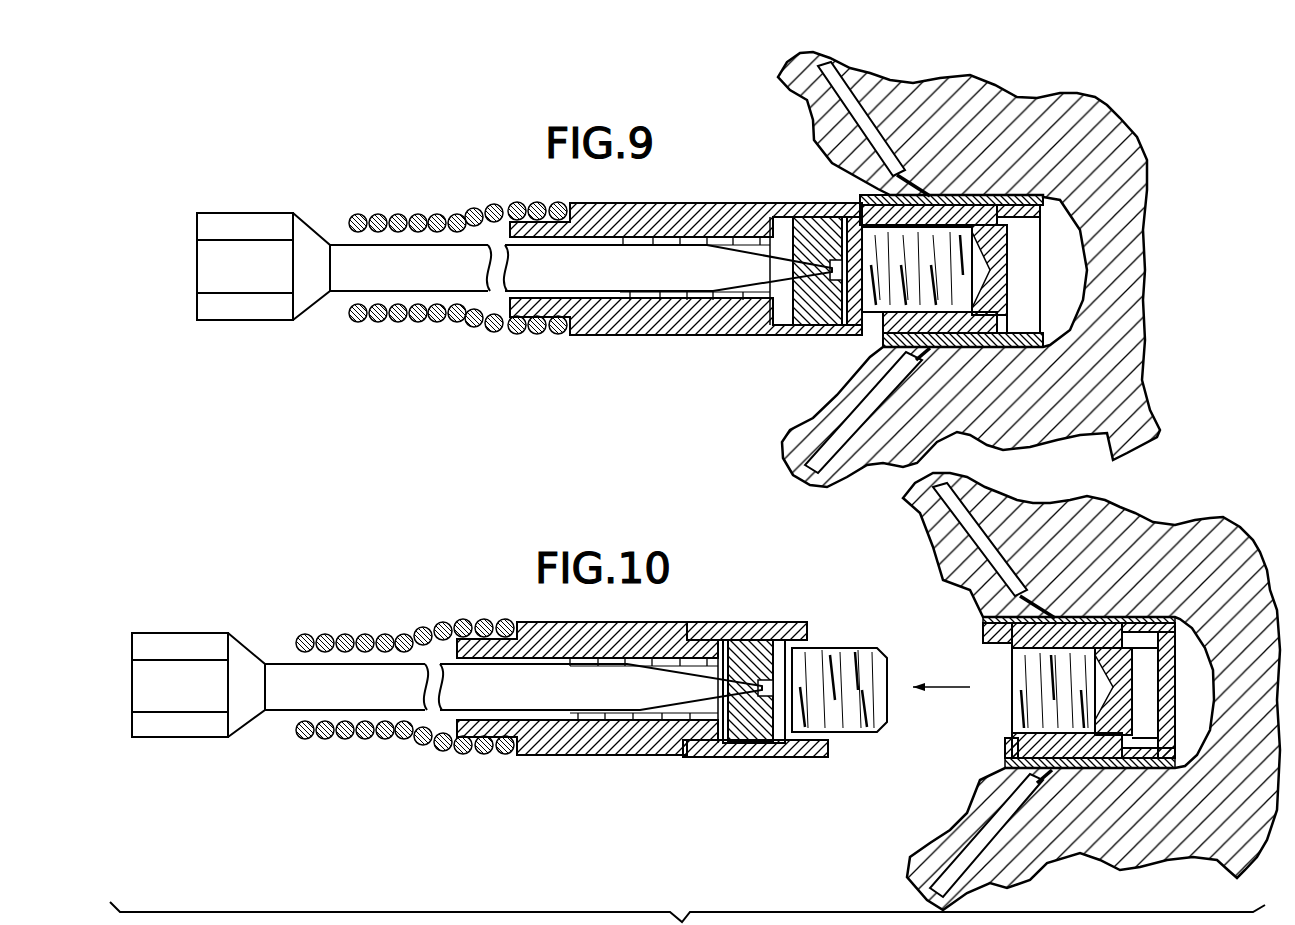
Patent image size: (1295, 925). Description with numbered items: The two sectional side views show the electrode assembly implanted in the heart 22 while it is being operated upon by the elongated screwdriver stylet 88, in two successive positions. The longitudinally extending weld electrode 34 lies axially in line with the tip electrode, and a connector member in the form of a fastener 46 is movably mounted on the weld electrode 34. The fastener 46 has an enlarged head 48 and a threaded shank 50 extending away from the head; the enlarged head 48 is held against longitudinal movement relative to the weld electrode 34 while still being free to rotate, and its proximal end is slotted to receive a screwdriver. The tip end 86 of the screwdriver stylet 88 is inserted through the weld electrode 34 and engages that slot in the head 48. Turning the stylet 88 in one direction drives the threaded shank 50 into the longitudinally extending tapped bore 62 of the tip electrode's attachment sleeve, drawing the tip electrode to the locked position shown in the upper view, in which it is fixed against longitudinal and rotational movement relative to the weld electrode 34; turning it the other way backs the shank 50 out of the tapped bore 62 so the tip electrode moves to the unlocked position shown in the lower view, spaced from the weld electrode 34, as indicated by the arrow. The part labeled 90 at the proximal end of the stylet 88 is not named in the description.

In FIG. 9, the heart 22 is at (1055, 95).
In FIG. 10, the heart 22 is at (1233, 515).
In FIG. 9, the weld electrode 34 is at (650, 345).
In FIG. 10, the weld electrode 34 is at (587, 768).
In FIG. 10, the fastener 46 is at (835, 640).
In FIG. 9, the enlarged head 48 is at (817, 227).
In FIG. 10, the enlarged head 48 is at (752, 740).
In FIG. 10, the threaded shank 50 is at (860, 660).
In FIG. 10, the tapped bore 62 is at (1052, 702).
In FIG. 9, the tip end 86 is at (773, 272).
In FIG. 10, the tip end 86 is at (693, 697).
In FIG. 9, the screwdriver stylet 88 is at (422, 298).
In FIG. 10, the screwdriver stylet 88 is at (357, 668).
In FIG. 9, the handle 90 is at (256, 225).
In FIG. 10, the handle 90 is at (172, 725).